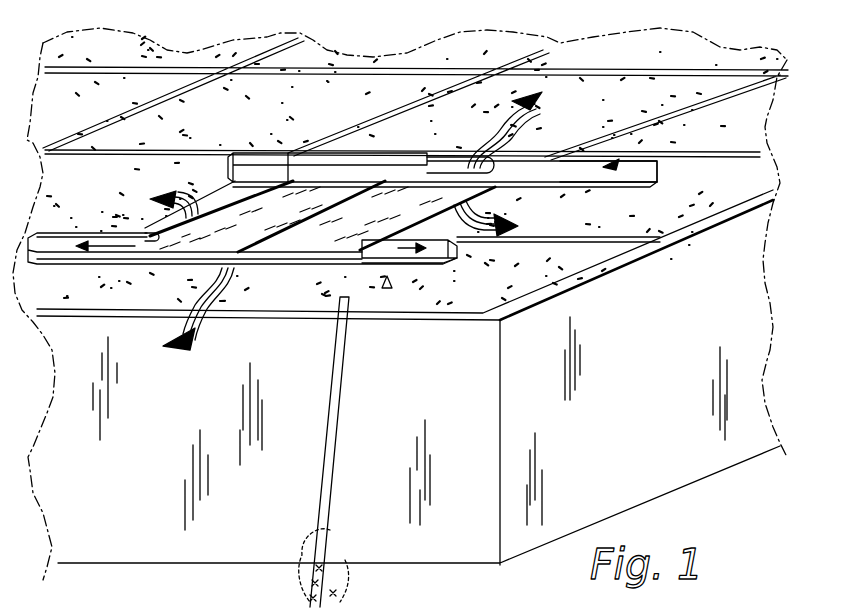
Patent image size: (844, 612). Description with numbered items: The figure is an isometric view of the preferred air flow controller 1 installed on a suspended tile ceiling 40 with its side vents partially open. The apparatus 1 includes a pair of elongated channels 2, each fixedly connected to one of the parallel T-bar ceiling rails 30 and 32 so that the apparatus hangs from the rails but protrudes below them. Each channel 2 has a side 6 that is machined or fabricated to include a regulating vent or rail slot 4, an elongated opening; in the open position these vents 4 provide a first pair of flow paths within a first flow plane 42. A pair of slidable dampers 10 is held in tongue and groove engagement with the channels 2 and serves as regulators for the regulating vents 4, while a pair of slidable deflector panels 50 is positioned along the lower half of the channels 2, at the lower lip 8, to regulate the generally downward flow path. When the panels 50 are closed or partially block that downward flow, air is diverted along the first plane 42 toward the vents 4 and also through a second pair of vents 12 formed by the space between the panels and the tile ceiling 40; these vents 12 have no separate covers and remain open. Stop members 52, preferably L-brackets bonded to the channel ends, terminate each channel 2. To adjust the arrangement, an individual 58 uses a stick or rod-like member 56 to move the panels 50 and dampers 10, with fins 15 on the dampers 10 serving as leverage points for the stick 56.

The air flow controller 1 is at (387, 282).
The elongated channel 2 is at (745, 162).
The regulating vent 4 is at (497, 167).
The side 6 is at (603, 167).
The lower lip 8 is at (33, 303).
The slidable damper 10 is at (310, 152).
The second pair of vents 12 is at (145, 252).
The fin 15 is at (383, 167).
The ceiling rail 30 is at (760, 163).
The ceiling rail 32 is at (625, 242).
The tile ceiling 40 is at (117, 50).
The first flow plane 42 is at (197, 335).
The slidable panel 50 is at (293, 245).
The stop member 52 is at (40, 187).
The stick 56 is at (335, 410).
The individual 58 is at (340, 562).